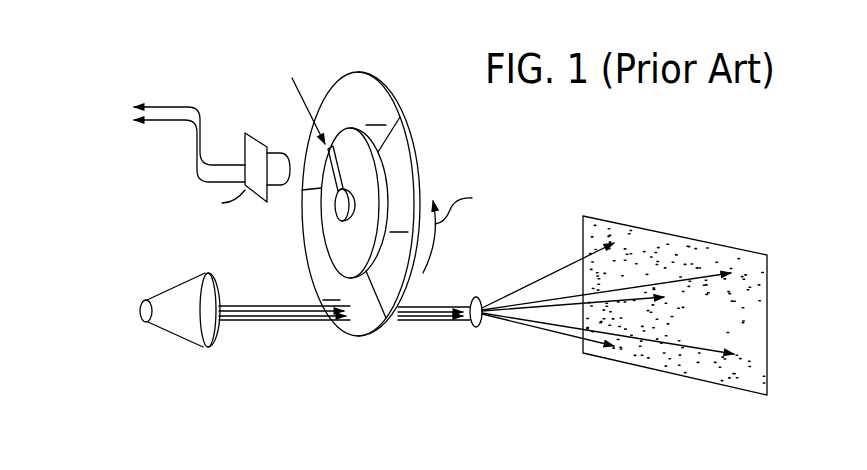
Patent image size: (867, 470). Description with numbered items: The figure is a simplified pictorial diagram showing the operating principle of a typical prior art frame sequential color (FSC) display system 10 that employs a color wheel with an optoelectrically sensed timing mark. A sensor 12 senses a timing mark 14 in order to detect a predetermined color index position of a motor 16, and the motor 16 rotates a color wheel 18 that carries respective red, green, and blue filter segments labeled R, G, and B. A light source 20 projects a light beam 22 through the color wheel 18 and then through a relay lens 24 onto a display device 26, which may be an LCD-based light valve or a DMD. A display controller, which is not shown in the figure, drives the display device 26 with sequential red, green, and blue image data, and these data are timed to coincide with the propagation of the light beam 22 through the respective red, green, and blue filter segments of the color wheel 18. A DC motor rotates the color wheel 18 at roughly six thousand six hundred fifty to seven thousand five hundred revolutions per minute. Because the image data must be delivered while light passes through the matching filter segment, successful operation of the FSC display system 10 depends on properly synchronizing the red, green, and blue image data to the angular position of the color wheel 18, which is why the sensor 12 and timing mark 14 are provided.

The frame sequential color display system 10 is at (541, 157).
The sensor 12 is at (278, 162).
The timing mark 14 is at (337, 163).
The motor 16 is at (325, 236).
The color wheel 18 is at (400, 99).
The light source 20 is at (170, 295).
The light beam 22 is at (413, 320).
The relay lens 24 is at (473, 297).
The display device 26 is at (672, 252).